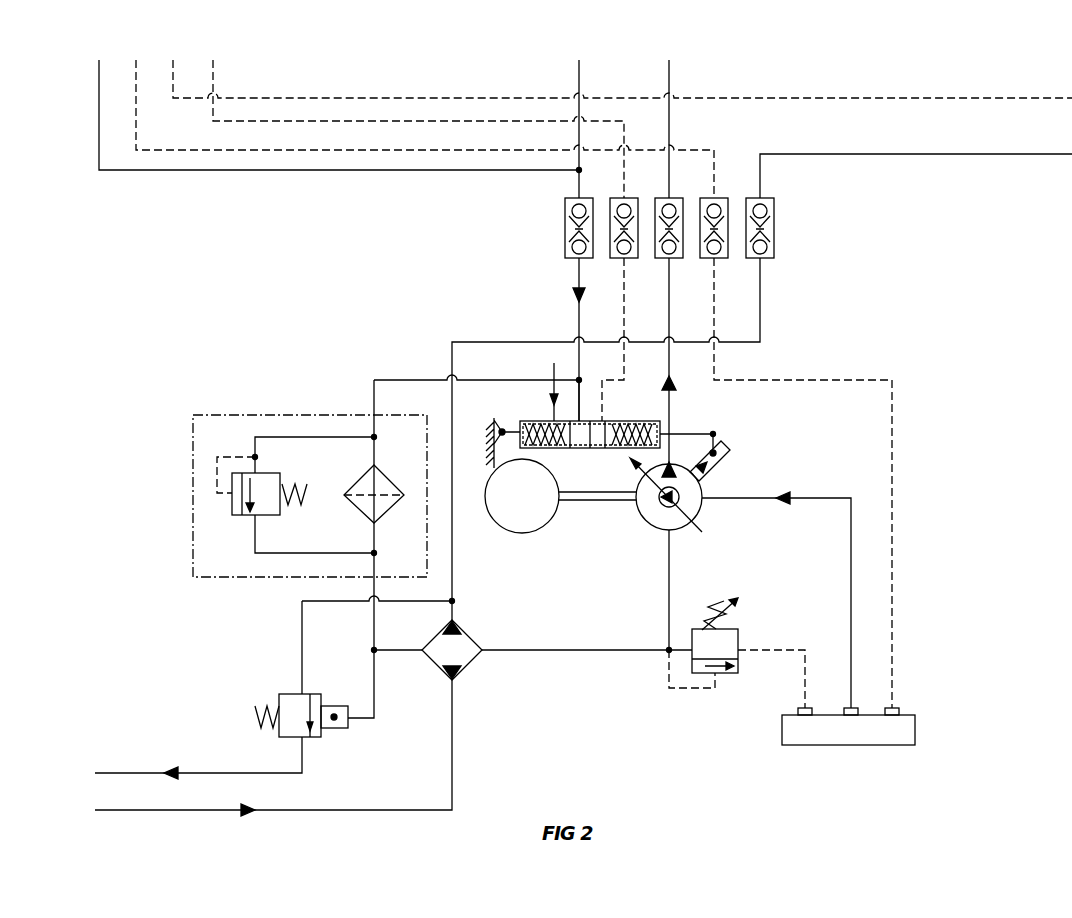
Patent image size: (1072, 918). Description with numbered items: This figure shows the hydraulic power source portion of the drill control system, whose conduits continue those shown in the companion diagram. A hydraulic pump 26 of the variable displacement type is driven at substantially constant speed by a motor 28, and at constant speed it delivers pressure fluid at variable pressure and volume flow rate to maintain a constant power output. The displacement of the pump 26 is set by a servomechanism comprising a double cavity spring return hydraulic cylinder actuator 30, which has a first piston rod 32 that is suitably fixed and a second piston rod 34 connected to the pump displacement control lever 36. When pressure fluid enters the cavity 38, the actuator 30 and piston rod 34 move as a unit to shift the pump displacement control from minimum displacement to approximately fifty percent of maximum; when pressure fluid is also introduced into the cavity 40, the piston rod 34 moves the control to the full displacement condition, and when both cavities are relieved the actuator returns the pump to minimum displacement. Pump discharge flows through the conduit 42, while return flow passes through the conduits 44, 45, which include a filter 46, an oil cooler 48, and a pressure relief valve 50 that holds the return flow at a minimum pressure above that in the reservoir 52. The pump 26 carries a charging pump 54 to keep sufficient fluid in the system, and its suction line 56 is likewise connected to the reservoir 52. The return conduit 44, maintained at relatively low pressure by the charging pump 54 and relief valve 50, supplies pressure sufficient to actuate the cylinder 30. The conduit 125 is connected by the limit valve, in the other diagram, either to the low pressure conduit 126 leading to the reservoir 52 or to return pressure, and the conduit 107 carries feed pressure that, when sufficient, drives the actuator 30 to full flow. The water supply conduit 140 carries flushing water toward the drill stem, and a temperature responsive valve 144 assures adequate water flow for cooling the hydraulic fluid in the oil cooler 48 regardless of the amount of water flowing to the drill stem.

The hydraulic pump 26 is at (683, 528).
The motor 28 is at (545, 527).
The double cavity spring return hydraulic cylinder actuator 30 is at (554, 366).
The first piston rod 32 is at (516, 400).
The second piston rod 34 is at (690, 434).
The pump displacement control lever 36 is at (727, 456).
The cavity 38 is at (588, 449).
The cavity 40 is at (603, 449).
The conduit 42 is at (670, 86).
The conduit 44 is at (197, 171).
The conduit 45 is at (580, 86).
The filter 46 is at (310, 415).
The oil cooler 48 is at (465, 668).
The pressure relief valve 50 is at (728, 677).
The reservoir 52 is at (882, 745).
The charging pump 54 is at (655, 512).
The suction line 56 is at (770, 499).
The conduit 107 is at (313, 121).
The conduit 125 is at (173, 97).
The low pressure conduit 126 is at (257, 151).
The water supply conduit 140 is at (452, 778).
The temperature responsive valve 144 is at (290, 694).